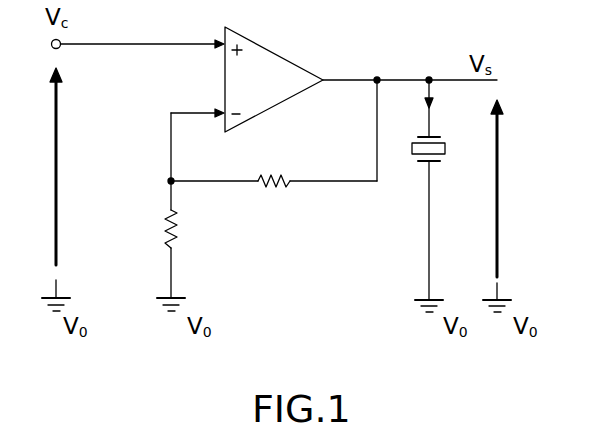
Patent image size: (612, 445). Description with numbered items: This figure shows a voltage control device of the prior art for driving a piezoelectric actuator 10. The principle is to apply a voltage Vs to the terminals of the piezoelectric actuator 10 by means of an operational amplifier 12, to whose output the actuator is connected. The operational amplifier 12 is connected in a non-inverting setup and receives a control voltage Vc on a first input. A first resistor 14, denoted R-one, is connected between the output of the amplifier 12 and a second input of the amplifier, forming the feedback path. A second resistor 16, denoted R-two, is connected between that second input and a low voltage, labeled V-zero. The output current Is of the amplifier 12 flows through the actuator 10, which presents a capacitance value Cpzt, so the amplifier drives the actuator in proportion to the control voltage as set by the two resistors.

The piezoelectric actuator 10 is at (405, 167).
The operational amplifier 12 is at (271, 38).
The first resistor 14 is at (294, 160).
The second resistor 16 is at (190, 231).